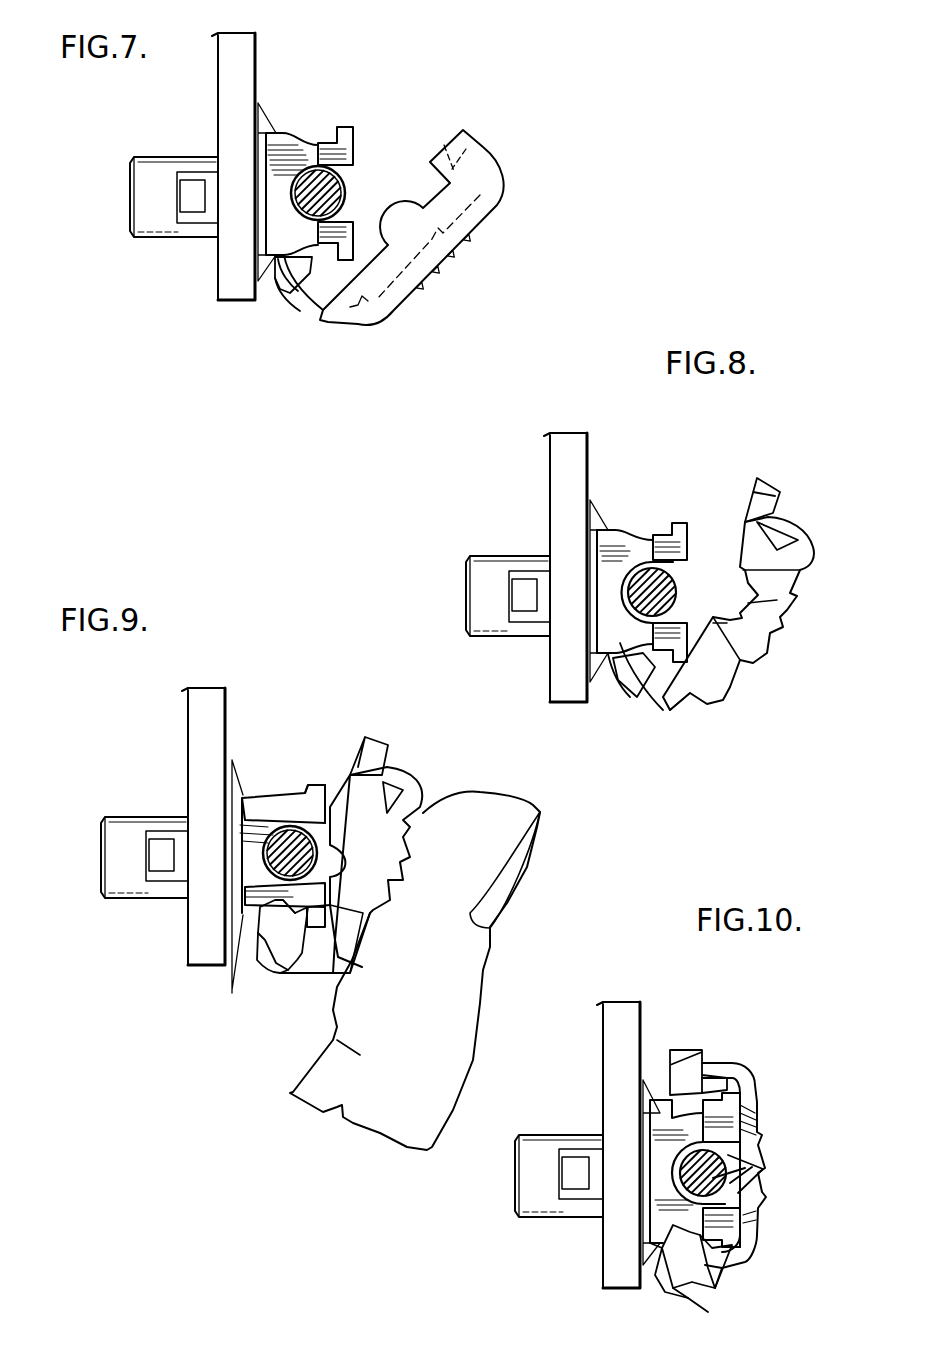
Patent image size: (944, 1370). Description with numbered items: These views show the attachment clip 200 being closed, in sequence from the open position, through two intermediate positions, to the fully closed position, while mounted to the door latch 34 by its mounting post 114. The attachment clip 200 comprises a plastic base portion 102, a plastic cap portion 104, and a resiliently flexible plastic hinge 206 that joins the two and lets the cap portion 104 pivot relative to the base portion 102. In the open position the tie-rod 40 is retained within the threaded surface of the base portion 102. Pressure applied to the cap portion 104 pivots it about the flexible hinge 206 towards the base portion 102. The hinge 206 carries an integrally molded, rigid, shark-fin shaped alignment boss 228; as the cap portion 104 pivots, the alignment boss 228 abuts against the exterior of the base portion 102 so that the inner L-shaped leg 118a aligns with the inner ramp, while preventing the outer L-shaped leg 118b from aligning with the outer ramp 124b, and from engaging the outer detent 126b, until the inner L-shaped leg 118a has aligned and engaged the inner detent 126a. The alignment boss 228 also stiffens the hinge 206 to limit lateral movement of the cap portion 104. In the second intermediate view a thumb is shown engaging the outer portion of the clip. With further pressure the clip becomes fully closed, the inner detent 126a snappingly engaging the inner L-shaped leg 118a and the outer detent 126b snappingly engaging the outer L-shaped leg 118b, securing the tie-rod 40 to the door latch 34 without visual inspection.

In FIG. 7, the door latch 34 is at (267, 156).
In FIG. 8, the door latch 34 is at (581, 542).
In FIG. 9, the door latch 34 is at (213, 787).
In FIG. 10, the door latch 34 is at (630, 1115).
In FIG. 7, the tie-rod 40 is at (344, 184).
In FIG. 8, the tie-rod 40 is at (674, 581).
In FIG. 9, the tie-rod 40 is at (290, 853).
In FIG. 10, the tie-rod 40 is at (759, 1168).
In FIG. 7, the base portion 102 is at (306, 172).
In FIG. 8, the base portion 102 is at (631, 560).
In FIG. 9, the base portion 102 is at (278, 855).
In FIG. 10, the base portion 102 is at (684, 1172).
In FIG. 7, the cap portion 104 is at (466, 227).
In FIG. 8, the cap portion 104 is at (751, 573).
In FIG. 9, the cap portion 104 is at (381, 827).
In FIG. 10, the cap portion 104 is at (729, 1113).
In FIG. 7, the mounting post 114 is at (149, 220).
In FIG. 8, the mounting post 114 is at (473, 590).
In FIG. 9, the mounting post 114 is at (130, 831).
In FIG. 10, the mounting post 114 is at (521, 1194).
In FIG. 7, the inner L-shaped leg 118a is at (366, 224).
In FIG. 10, the inner L-shaped leg 118a is at (784, 1245).
In FIG. 7, the outer L-shaped leg 118b is at (375, 115).
In FIG. 8, the outer L-shaped leg 118b is at (681, 520).
In FIG. 9, the outer L-shaped leg 118b is at (391, 789).
In FIG. 10, the outer L-shaped leg 118b is at (777, 1111).
In FIG. 8, the outer ramp 124b is at (743, 474).
In FIG. 9, the outer ramp 124b is at (346, 725).
In FIG. 10, the inner detent 126a is at (794, 1192).
In FIG. 10, the outer detent 126b is at (750, 1059).
In FIG. 7, the attachment clip 200 is at (505, 113).
In FIG. 9, the attachment clip 200 is at (415, 971).
In FIG. 7, the flexible hinge 206 is at (280, 318).
In FIG. 8, the flexible hinge 206 is at (660, 711).
In FIG. 9, the flexible hinge 206 is at (305, 975).
In FIG. 10, the flexible hinge 206 is at (722, 1289).
In FIG. 7, the alignment boss 228 is at (322, 331).
In FIG. 8, the alignment boss 228 is at (622, 700).
In FIG. 9, the alignment boss 228 is at (267, 970).
In FIG. 10, the alignment boss 228 is at (676, 1283).